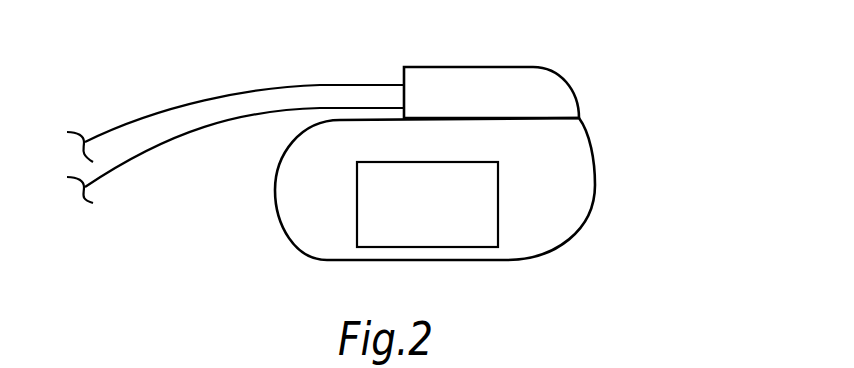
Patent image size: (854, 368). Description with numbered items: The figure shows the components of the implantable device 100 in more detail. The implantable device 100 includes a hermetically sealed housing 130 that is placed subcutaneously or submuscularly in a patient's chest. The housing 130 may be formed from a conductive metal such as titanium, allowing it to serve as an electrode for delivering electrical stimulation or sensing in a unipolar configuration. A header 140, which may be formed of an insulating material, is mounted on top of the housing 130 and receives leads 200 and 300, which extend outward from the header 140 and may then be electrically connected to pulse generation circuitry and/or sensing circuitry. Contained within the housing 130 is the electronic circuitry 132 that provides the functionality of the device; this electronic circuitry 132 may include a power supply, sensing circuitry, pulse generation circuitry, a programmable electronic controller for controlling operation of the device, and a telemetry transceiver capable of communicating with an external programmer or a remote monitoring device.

The implantable device 100 is at (385, 135).
The housing 130 is at (594, 163).
The electronic circuitry 132 is at (499, 176).
The header 140 is at (462, 66).
The lead 200 is at (232, 85).
The lead 300 is at (158, 142).